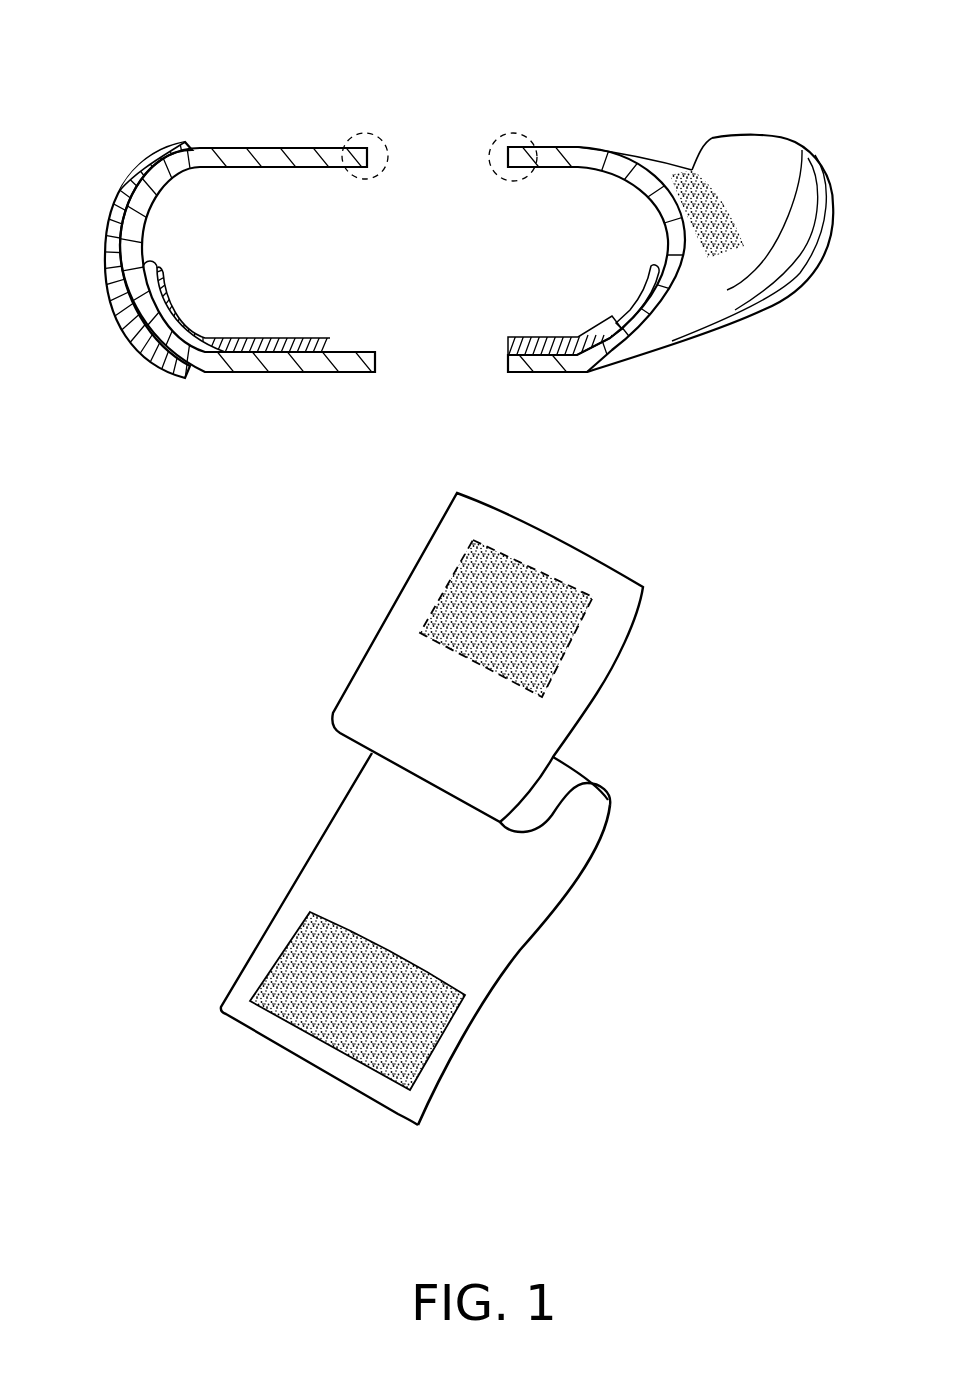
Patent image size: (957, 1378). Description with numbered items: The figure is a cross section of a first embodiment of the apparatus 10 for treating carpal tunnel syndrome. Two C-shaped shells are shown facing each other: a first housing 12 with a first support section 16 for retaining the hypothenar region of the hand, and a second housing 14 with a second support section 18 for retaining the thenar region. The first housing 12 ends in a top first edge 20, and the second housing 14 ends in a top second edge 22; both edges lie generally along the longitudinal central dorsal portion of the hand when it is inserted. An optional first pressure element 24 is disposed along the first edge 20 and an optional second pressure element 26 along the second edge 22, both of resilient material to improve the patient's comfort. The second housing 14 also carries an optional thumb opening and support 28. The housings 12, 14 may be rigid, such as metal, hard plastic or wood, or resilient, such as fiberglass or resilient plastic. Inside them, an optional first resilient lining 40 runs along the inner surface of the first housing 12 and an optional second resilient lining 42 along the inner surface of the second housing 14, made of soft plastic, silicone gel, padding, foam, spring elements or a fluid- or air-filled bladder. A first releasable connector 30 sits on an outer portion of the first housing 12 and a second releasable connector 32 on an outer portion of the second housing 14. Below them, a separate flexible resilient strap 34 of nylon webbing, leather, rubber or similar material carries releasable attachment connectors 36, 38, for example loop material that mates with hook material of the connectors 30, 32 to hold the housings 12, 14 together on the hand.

The apparatus 10 is at (474, 104).
The first housing 12 is at (155, 221).
The second housing 14 is at (710, 293).
The first support section 16 is at (333, 337).
The second support section 18 is at (613, 333).
The top first edge 20 is at (366, 133).
The top second edge 22 is at (513, 143).
The first pressure element 24 is at (383, 148).
The second pressure element 26 is at (502, 170).
The thumb opening and support 28 is at (780, 138).
The first releasable connector 30 is at (120, 193).
The second releasable connector 32 is at (692, 170).
The flexible resilient strap 34 is at (595, 708).
The releasable attachment connector 36 is at (582, 608).
The releasable attachment connector 38 is at (445, 1042).
The first resilient lining 40 is at (200, 325).
The second resilient lining 42 is at (640, 283).